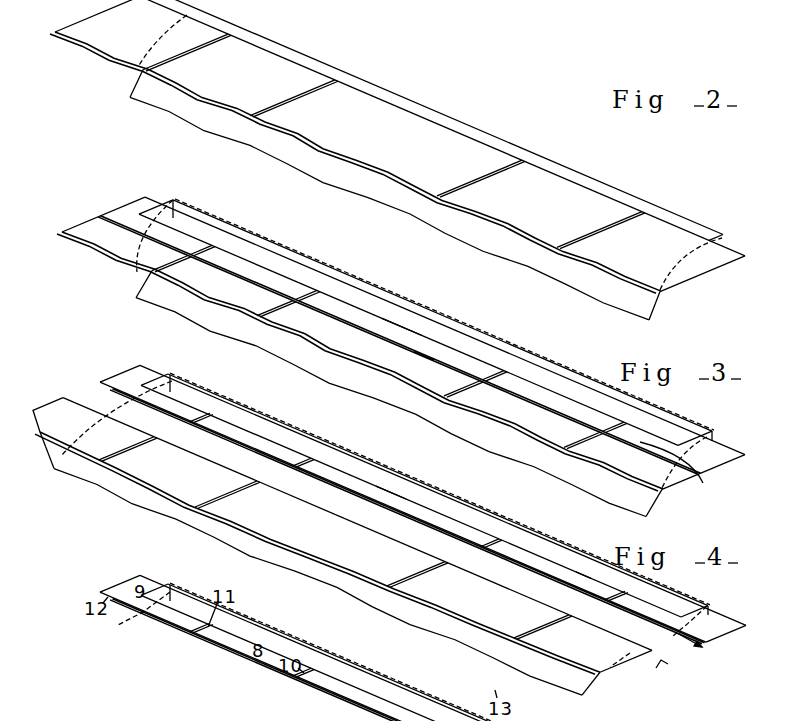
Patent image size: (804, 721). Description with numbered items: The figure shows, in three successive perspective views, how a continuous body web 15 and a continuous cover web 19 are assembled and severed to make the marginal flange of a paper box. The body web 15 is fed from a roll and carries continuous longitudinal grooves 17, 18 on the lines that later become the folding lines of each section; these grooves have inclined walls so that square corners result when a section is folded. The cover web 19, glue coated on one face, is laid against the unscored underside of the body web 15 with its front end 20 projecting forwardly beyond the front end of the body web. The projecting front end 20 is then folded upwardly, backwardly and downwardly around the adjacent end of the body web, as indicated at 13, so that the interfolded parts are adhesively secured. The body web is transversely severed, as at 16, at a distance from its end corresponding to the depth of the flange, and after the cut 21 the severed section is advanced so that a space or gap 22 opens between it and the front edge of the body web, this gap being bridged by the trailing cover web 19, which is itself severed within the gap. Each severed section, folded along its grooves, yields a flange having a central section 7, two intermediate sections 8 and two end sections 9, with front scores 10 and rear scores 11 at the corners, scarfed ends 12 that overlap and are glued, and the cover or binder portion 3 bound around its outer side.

In FIG. 4, the cover or binder portion 3 is at (587, 573).
In FIG. 3, the central section 7 is at (396, 322).
In FIG. 4, the central section 7 is at (387, 484).
In FIG. 3, the intermediate sections 8 is at (555, 398).
In FIG. 4, the intermediate sections 8 is at (407, 516).
In FIG. 3, the end sections 9 is at (424, 328).
In FIG. 4, the end sections 9 is at (421, 496).
In FIG. 2, the front scores or grooves 10 is at (302, 95).
In FIG. 3, the front scores or grooves 10 is at (313, 297).
In FIG. 4, the front scores or grooves 10 is at (315, 460).
In FIG. 2, the rear scores or grooves 11 is at (211, 53).
In FIG. 3, the rear scores or grooves 11 is at (210, 243).
In FIG. 4, the rear scores or grooves 11 is at (208, 420).
In FIG. 2, the scarfed ends 12 is at (58, 37).
In FIG. 3, the scarfed ends 12 is at (72, 234).
In FIG. 4, the scarfed ends 12 is at (108, 386).
In FIG. 3, the inwardly turned forward edge of binder 13 is at (561, 396).
In FIG. 4, the inwardly turned forward edge of binder 13 is at (543, 540).
In FIG. 2, the body web 15 is at (355, 163).
In FIG. 3, the body web 15 is at (359, 362).
In FIG. 4, the body web 15 is at (326, 538).
In FIG. 3, the transverse severing line 16 is at (427, 353).
In FIG. 3, the longitudinal grooves 17 is at (478, 390).
In FIG. 4, the longitudinal grooves 17 is at (247, 488).
In FIG. 3, the longitudinal grooves 18 is at (187, 260).
In FIG. 4, the longitudinal grooves 18 is at (143, 440).
In FIG. 2, the cover web 19 is at (478, 243).
In FIG. 3, the cover web 19 is at (452, 404).
In FIG. 4, the cover web 19 is at (468, 628).
In FIG. 2, the front end of cover web 20 is at (677, 221).
In FIG. 3, the cut 21 is at (680, 469).
In FIG. 4, the cut 21 is at (658, 636).
In FIG. 4, the space or gap 22 is at (683, 653).